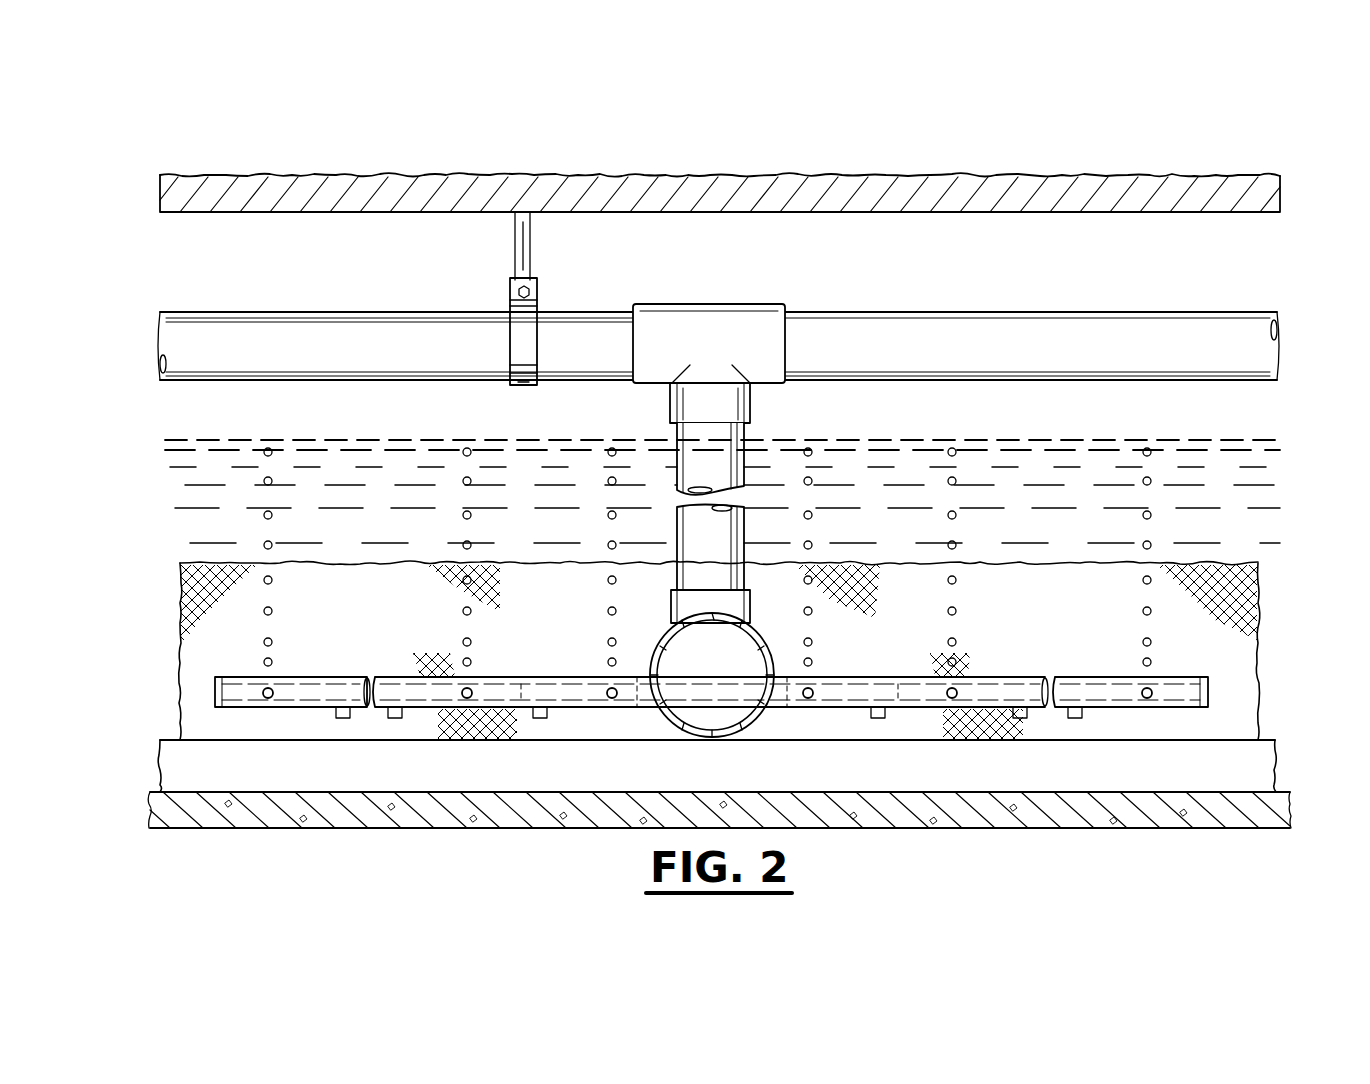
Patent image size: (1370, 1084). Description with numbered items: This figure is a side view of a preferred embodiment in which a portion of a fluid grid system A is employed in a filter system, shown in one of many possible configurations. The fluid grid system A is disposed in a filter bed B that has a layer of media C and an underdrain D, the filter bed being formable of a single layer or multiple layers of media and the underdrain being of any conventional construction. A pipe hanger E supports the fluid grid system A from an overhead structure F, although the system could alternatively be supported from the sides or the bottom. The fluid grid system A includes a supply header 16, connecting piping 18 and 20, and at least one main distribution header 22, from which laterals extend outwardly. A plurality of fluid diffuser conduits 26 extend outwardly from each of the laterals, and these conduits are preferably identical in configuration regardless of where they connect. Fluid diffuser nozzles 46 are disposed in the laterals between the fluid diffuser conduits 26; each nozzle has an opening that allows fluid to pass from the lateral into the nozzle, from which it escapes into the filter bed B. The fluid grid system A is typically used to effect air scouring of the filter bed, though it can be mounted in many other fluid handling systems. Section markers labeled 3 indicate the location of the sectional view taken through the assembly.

The supply header 16 is at (957, 322).
The connecting piping 18 is at (768, 382).
The connecting piping 20 is at (742, 532).
The main distribution header 22 is at (650, 640).
The fluid diffuser conduit 26 is at (470, 692).
The fluid diffuser nozzle 46 is at (343, 718).
The fluid grid system A is at (318, 300).
The filter bed B is at (1290, 451).
The layer of media C is at (1265, 563).
The underdrain D is at (1280, 758).
The pipe hanger E is at (533, 241).
The structure F is at (661, 177).
The section line for FIG. 3 is at (207, 160).